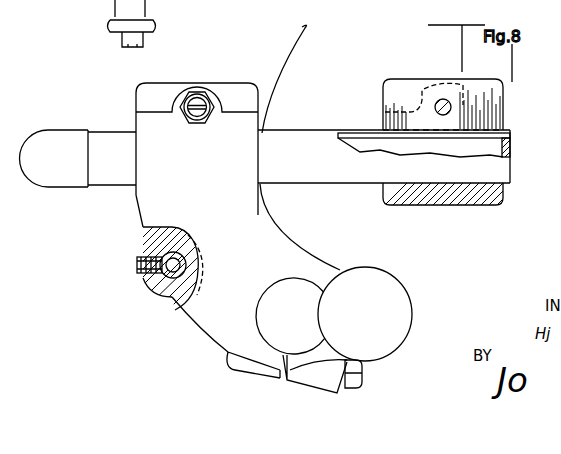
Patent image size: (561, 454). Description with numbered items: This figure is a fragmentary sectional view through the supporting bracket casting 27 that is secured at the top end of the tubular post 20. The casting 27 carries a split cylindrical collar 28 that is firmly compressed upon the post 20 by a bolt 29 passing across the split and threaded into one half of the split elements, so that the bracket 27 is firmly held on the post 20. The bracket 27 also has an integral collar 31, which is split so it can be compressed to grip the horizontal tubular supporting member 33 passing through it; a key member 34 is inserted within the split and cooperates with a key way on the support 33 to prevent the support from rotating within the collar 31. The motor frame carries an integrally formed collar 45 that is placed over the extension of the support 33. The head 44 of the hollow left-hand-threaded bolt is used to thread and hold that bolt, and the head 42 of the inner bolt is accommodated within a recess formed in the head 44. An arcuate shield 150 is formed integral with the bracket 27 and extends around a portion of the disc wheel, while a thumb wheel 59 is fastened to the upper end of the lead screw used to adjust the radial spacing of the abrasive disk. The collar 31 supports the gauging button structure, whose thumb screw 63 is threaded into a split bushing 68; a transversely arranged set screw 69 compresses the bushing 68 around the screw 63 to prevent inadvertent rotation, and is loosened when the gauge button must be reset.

The tubular post 20 is at (287, 283).
The supporting bracket casting 27 is at (204, 324).
The split cylindrical collar 28 is at (322, 270).
The bolt 29 is at (345, 378).
The integral collar 31 is at (243, 133).
The horizontal tubular supporting member 33 is at (105, 177).
The key member 34 is at (153, 92).
The head of the bolt 42 is at (200, 100).
The head of the hollow bolt 44 is at (215, 100).
The collar 45 is at (487, 200).
The thumb wheel 59 is at (397, 307).
The thumb screw 63 is at (150, 291).
The bushing 68 is at (158, 258).
The set screw 69 is at (138, 266).
The arcuate shield 150 is at (308, 30).